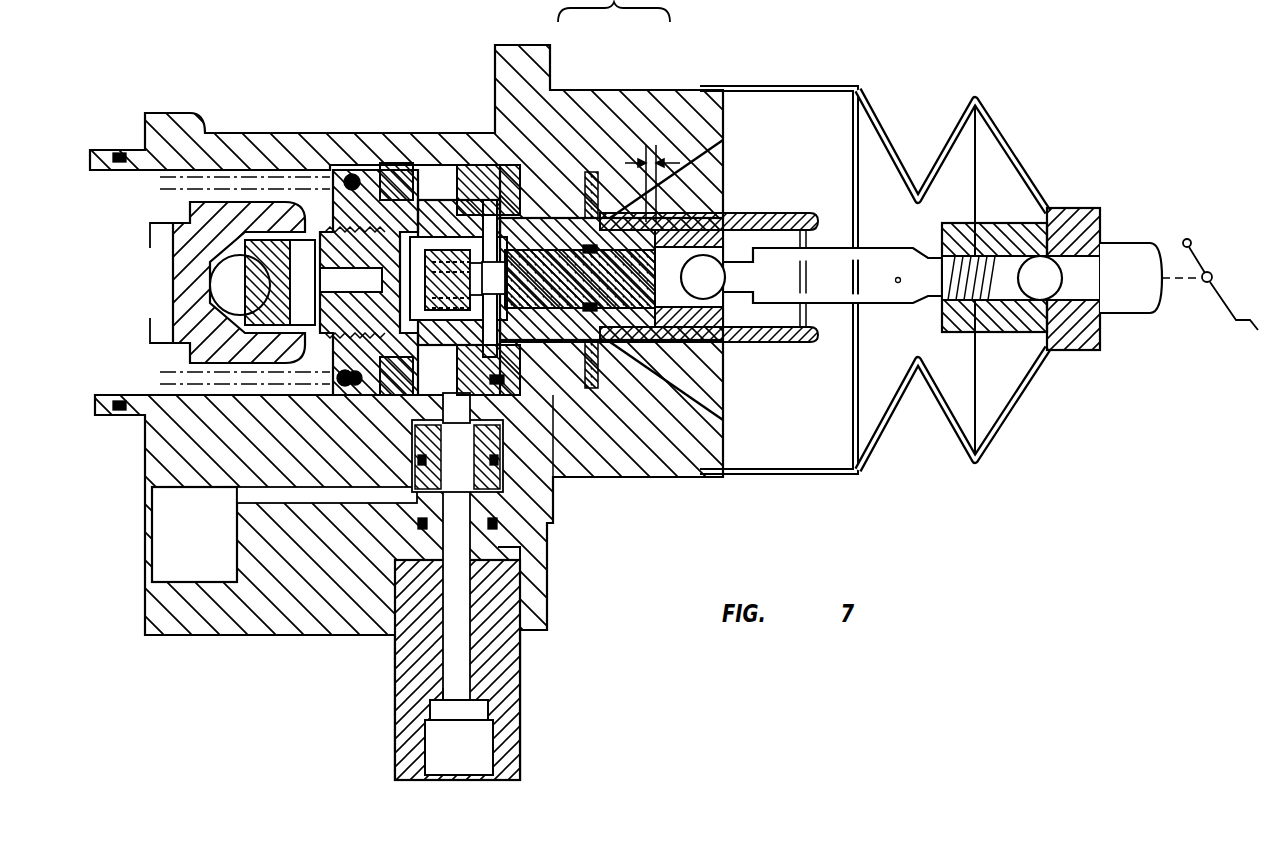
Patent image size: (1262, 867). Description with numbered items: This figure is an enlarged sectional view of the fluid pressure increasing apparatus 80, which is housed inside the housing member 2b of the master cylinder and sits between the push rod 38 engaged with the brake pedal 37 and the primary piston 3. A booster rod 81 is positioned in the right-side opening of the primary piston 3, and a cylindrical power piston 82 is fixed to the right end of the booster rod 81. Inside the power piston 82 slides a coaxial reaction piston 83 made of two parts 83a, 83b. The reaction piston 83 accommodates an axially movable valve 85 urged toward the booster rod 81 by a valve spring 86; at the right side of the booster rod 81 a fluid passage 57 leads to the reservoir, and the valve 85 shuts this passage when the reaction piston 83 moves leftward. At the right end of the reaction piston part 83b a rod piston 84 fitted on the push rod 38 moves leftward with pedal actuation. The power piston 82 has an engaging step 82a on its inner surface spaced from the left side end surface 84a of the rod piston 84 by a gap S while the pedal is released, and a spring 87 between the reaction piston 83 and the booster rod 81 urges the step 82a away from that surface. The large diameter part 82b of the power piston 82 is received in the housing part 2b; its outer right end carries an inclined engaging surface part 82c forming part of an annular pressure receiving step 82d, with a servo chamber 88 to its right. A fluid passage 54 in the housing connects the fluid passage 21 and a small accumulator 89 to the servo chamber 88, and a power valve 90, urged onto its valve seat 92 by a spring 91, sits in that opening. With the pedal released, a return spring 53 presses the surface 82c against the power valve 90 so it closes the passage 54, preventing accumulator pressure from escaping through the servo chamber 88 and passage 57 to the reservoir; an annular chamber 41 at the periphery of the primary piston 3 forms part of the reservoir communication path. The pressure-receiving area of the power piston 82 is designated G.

The housing member 2b is at (178, 112).
The primary piston 3 is at (222, 200).
The booster rod 81 is at (318, 240).
The fluid passage 57 is at (380, 230).
The power piston 82 is at (412, 240).
The servo chamber 88 is at (478, 190).
The valve 85 is at (422, 240).
The valve spring 86 is at (450, 250).
The spring 87 is at (455, 315).
The reaction piston 83 is at (614, 12).
The reaction piston part 83a is at (565, 240).
The reaction piston part 83b is at (595, 260).
The rod piston 84 is at (685, 246).
The left side end surface 84a is at (650, 279).
The gap S is at (652, 168).
The annular chamber 41 is at (150, 360).
The return spring 53 is at (340, 385).
The fluid pressure operation area G is at (608, 281).
The engaging step 82a is at (648, 325).
The large diameter part 82b is at (417, 426).
The inclined engaging surface part 82c is at (488, 398).
The annular pressure receiving step 82d is at (525, 400).
The push rod 38 is at (828, 310).
The brake pedal 37 is at (1220, 310).
The fluid pressure increasing apparatus 80 is at (618, 528).
The fluid passage 21 is at (195, 532).
The fluid passage 54 is at (362, 500).
The power valve 90 is at (412, 470).
The spring 91 is at (490, 458).
The valve seat 92 is at (497, 522).
The accumulator 89 is at (315, 830).